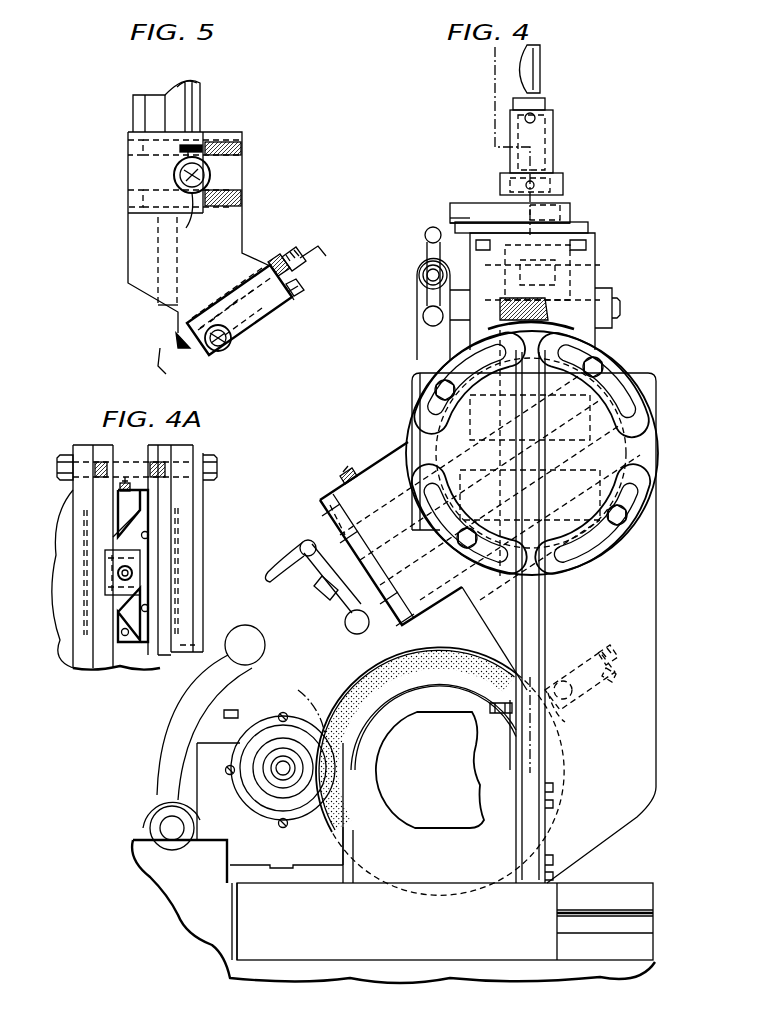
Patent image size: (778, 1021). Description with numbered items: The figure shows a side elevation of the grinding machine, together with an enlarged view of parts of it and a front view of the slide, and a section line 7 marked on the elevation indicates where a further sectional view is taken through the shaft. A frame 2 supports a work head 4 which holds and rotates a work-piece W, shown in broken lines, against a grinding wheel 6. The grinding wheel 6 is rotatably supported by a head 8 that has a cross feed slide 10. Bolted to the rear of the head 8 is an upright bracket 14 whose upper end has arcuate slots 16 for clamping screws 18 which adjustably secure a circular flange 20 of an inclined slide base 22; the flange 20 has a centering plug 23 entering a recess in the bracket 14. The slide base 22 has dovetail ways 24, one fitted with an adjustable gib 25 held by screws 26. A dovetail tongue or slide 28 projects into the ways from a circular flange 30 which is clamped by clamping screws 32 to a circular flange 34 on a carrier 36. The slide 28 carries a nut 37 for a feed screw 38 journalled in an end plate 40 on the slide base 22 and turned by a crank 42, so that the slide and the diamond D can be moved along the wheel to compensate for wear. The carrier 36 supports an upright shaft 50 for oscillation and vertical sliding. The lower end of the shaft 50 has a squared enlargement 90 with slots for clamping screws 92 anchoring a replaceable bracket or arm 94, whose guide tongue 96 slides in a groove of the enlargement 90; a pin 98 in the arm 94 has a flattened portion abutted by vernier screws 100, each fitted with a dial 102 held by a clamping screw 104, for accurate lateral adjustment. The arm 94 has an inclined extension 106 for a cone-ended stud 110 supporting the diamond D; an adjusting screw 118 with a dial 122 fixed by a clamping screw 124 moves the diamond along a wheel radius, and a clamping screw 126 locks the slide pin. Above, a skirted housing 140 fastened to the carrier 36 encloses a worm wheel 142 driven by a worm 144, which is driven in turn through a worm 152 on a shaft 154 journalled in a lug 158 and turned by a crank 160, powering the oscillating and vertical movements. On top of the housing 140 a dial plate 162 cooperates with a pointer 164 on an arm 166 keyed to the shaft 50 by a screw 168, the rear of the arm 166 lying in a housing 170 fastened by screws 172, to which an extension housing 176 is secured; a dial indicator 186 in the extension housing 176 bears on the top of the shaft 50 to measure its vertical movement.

In FIG. 4, the frame 2 is at (347, 968).
In FIG. 4, the work head 4 is at (270, 712).
In FIG. 5, the grinding wheel 6 is at (241, 319).
In FIG. 4, the grinding wheel 6 is at (350, 690).
In FIG. 4, the section line 7 is at (506, 416).
In FIG. 4, the head 8 is at (380, 834).
In FIG. 4, the cross feed slide 10 is at (416, 937).
In FIG. 4A, the upright bracket 14 is at (190, 580).
In FIG. 4, the upright bracket 14 is at (634, 746).
In FIG. 4A, the arcuate slots 16 is at (190, 452).
In FIG. 4, the arcuate slots 16 is at (430, 405).
In FIG. 4A, the clamping screws 18 is at (218, 468).
In FIG. 4, the clamping screws 18 is at (436, 386).
In FIG. 4A, the circular flange 20 is at (171, 490).
In FIG. 4A, the inclined slide base 22 is at (158, 498).
In FIG. 4, the inclined slide base 22 is at (390, 468).
In FIG. 4A, the centering plug 23 is at (182, 645).
In FIG. 4A, the dovetail ways 24 is at (133, 645).
In FIG. 4, the dovetail ways 24 is at (332, 502).
In FIG. 4A, the adjustable gib 25 is at (144, 494).
In FIG. 4A, the screws 26 is at (123, 478).
In FIG. 4, the screws 26 is at (340, 476).
In FIG. 4A, the dovetail tongue or slide 28 is at (140, 540).
In FIG. 4A, the circular flange 30 is at (103, 668).
In FIG. 4A, the clamping screws 32 is at (62, 458).
In FIG. 4A, the circular flange 34 is at (82, 662).
In FIG. 4, the carrier 36 is at (658, 378).
In FIG. 4A, the nut 37 is at (120, 590).
In FIG. 4A, the feed screw 38 is at (118, 566).
In FIG. 4, the feed screw 38 is at (372, 561).
In FIG. 4, the end plate 40 is at (356, 634).
In FIG. 4, the crank 42 is at (268, 575).
In FIG. 5, the upright shaft 50 is at (133, 110).
In FIG. 5, the squared enlargement 90 is at (128, 176).
In FIG. 5, the clamping screws 92 is at (128, 203).
In FIG. 5, the bracket or arm 94 is at (222, 250).
In FIG. 4, the bracket or arm 94 is at (575, 637).
In FIG. 5, the guide tongue 96 is at (242, 136).
In FIG. 5, the pin 98 is at (230, 180).
In FIG. 5, the vernier screws 100 is at (174, 176).
In FIG. 5, the dial 102 is at (184, 221).
In FIG. 5, the clamping screw 104 is at (200, 140).
In FIG. 5, the extension 106 is at (246, 334).
In FIG. 4, the extension 106 is at (588, 690).
In FIG. 5, the cone-ended stud 110 is at (178, 335).
In FIG. 5, the adjusting screw 118 is at (300, 250).
In FIG. 4, the adjusting screw 118 is at (612, 648).
In FIG. 5, the dial 122 is at (270, 262).
In FIG. 5, the clamping screw 124 is at (298, 297).
In FIG. 5, the clamping screw 126 is at (220, 351).
In FIG. 4, the skirted housing 140 is at (595, 253).
In FIG. 4, the worm wheel 142 is at (600, 290).
In FIG. 4, the worm 144 is at (600, 272).
In FIG. 4, the worm 152 is at (418, 284).
In FIG. 4, the shaft 154 is at (419, 275).
In FIG. 4, the lug 158 is at (417, 323).
In FIG. 4, the crank 160 is at (425, 233).
In FIG. 4, the dial plate 162 is at (492, 222).
In FIG. 4, the pointer 164 is at (456, 225).
In FIG. 4, the arm 166 is at (470, 210).
In FIG. 4, the screw 168 is at (570, 205).
In FIG. 4, the housing 170 is at (563, 190).
In FIG. 4, the screws 172 is at (588, 228).
In FIG. 4, the extension housing 176 is at (553, 148).
In FIG. 4, the dial indicator 186 is at (540, 75).
In FIG. 5, the diamond D is at (176, 344).
In FIG. 4, the diamond D is at (566, 716).
In FIG. 4, the work-piece W is at (305, 697).